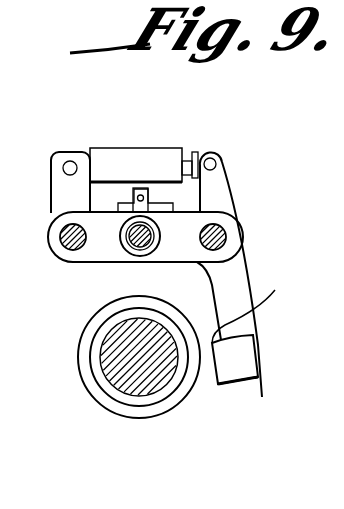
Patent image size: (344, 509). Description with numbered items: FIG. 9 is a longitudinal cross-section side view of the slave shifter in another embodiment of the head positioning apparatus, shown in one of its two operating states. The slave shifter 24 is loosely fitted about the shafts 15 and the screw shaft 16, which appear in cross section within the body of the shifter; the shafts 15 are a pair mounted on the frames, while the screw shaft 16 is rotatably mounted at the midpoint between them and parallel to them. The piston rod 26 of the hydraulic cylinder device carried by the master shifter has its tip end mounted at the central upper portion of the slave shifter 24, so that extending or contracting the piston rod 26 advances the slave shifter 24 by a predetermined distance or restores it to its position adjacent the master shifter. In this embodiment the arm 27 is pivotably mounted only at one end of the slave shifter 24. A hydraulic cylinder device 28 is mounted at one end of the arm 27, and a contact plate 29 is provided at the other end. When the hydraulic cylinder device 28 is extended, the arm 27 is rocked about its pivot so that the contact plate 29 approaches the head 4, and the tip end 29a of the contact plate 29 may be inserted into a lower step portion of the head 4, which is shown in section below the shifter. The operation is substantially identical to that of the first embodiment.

The head 4 is at (176, 402).
The shafts 15 is at (62, 233).
The screw shaft 16 is at (128, 262).
The slave shifter 24 is at (180, 230).
The piston rod 26 is at (134, 203).
The arm 27 is at (246, 180).
The hydraulic cylinder device 28 is at (138, 155).
The contact plate 29 is at (249, 384).
The tip end 29a is at (271, 306).